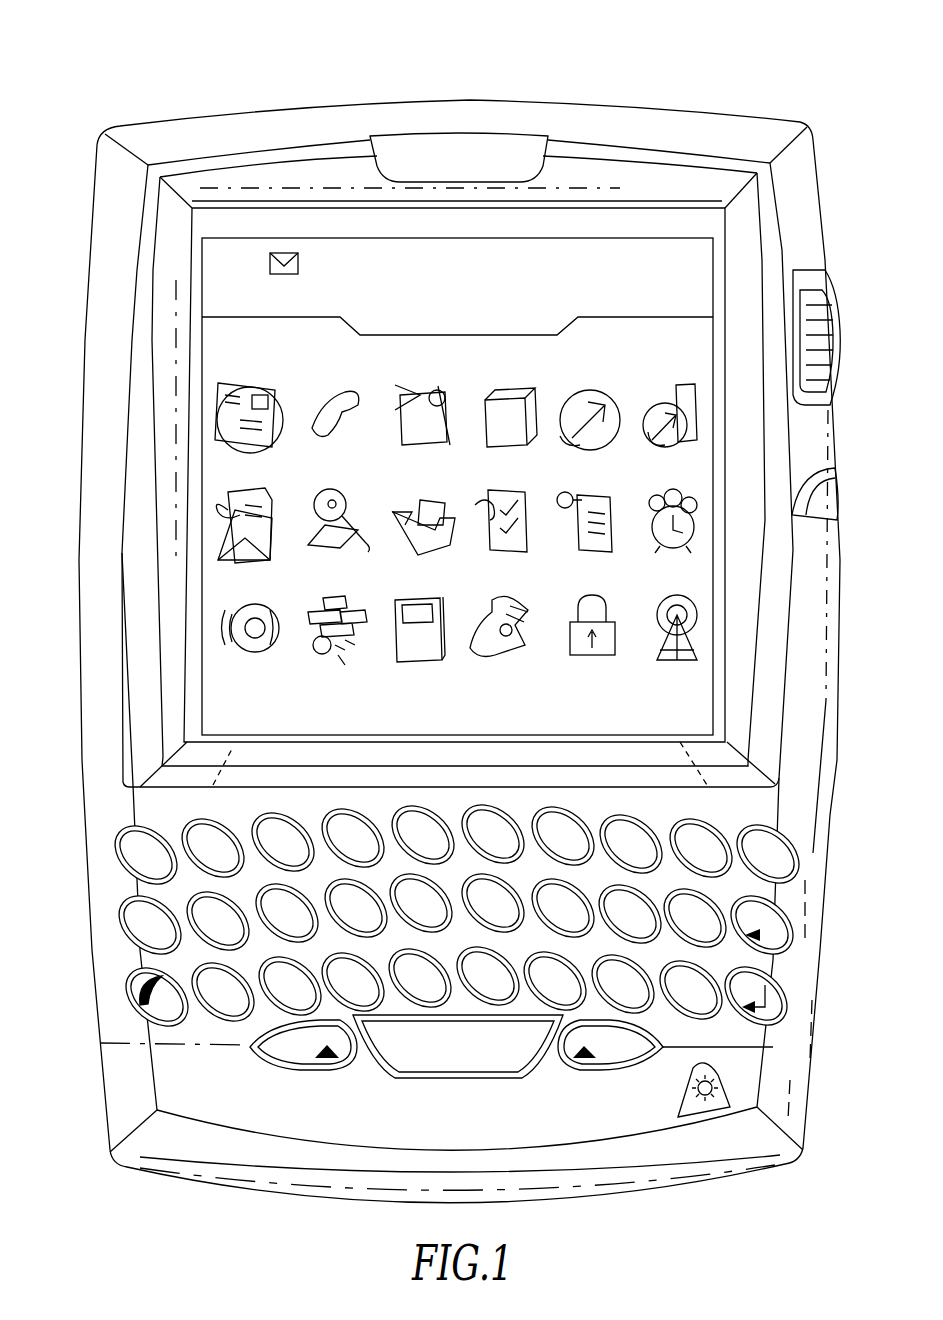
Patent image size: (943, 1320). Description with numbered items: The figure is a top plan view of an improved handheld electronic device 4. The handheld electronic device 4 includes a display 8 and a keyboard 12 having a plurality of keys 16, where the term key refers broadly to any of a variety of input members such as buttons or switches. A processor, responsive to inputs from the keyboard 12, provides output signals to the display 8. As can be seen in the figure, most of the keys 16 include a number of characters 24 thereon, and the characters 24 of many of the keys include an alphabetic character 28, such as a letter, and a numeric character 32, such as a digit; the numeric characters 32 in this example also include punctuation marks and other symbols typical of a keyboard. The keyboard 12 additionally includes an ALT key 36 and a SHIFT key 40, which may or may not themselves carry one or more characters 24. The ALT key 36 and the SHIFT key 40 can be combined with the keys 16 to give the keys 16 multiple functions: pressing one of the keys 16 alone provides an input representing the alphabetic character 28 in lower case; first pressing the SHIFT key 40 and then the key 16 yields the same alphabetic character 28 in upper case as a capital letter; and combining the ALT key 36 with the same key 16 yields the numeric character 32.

The handheld electronic device 4 is at (595, 88).
The display 8 is at (670, 275).
The keyboard 12 is at (772, 806).
The keys 16 is at (115, 847).
The characters 24 is at (118, 840).
The alphabetic character 28 is at (165, 850).
The numeric character 32 is at (143, 832).
The ALT key 36 is at (280, 1073).
The SHIFT key 40 is at (580, 1073).